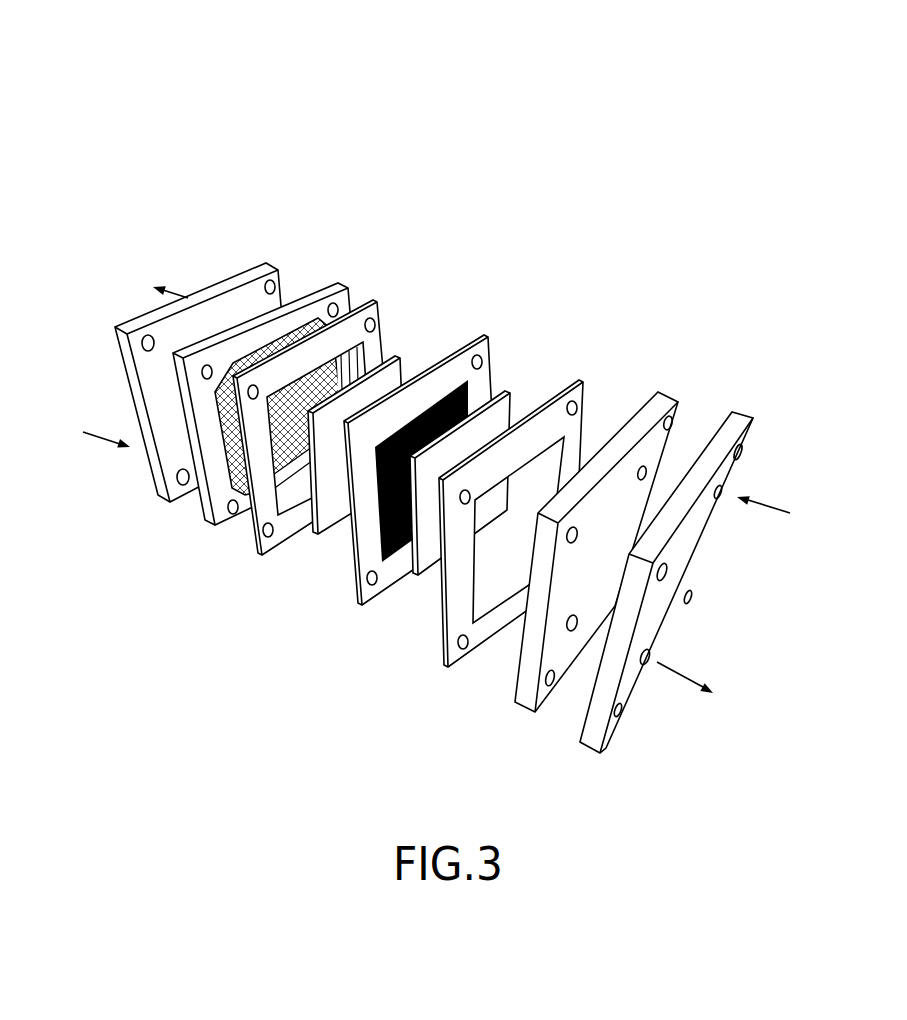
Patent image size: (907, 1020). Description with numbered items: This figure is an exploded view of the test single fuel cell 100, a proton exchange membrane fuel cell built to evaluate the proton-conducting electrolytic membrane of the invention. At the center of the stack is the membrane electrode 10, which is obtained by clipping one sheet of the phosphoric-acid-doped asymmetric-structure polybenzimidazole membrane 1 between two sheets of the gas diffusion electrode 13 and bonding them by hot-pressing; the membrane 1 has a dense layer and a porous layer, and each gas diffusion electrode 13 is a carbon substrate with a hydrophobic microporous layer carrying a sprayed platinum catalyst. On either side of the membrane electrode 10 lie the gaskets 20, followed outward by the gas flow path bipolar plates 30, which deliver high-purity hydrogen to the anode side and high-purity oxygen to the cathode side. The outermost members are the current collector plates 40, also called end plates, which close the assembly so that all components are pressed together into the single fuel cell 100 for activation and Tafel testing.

The test single fuel cell 100 is at (627, 162).
The membrane electrode 10 is at (468, 222).
The phosphoric-acid-doped asymmetric-structure polybenzimidazole membrane 1 is at (462, 355).
The gas diffusion electrode 13 is at (400, 357).
The gasket 20 is at (377, 300).
The gas flow path bipolar plate 30 is at (321, 282).
The current collector plate 40 is at (235, 279).